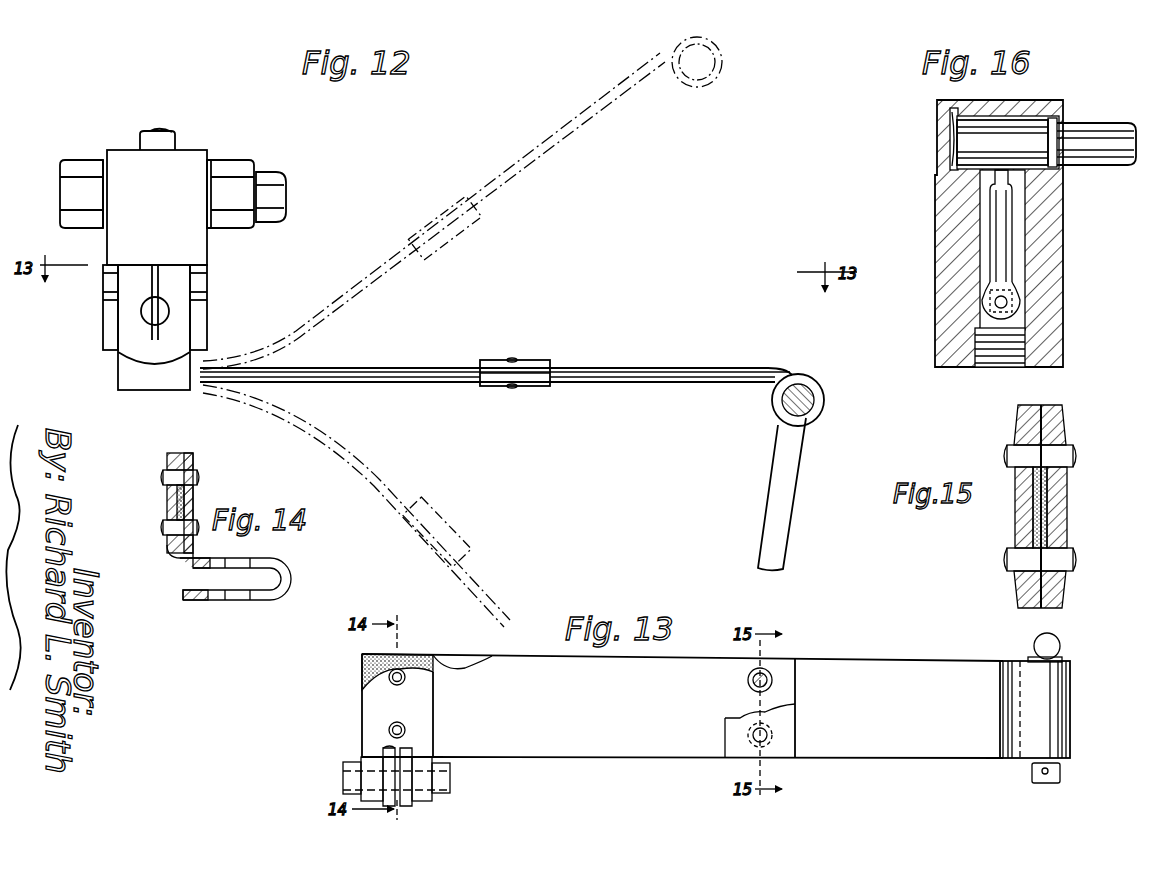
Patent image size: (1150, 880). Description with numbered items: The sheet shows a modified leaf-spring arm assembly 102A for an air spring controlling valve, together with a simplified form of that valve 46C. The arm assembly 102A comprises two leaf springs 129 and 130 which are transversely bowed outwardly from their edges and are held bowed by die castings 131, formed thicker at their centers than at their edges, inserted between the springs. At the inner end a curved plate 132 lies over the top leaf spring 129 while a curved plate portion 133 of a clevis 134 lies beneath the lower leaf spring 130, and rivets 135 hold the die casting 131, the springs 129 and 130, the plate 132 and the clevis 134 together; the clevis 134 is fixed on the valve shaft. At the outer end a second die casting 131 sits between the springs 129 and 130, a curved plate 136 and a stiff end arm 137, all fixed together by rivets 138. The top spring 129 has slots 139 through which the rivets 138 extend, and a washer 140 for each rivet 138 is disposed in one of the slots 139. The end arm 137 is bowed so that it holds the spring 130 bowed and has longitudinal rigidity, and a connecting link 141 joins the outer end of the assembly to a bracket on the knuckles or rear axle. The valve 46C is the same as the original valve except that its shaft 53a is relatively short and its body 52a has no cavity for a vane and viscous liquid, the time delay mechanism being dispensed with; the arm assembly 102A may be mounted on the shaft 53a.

In FIG. 12, the arm assembly 102A is at (590, 135).
In FIG. 13, the arm assembly 102A is at (902, 764).
In FIG. 12, the top leaf spring 129 is at (405, 368).
In FIG. 14, the top leaf spring 129 is at (186, 490).
In FIG. 13, the top leaf spring 129 is at (606, 758).
In FIG. 15, the top leaf spring 129 is at (1052, 490).
In FIG. 12, the lower leaf spring 130 is at (395, 381).
In FIG. 14, the lower leaf spring 130 is at (170, 490).
In FIG. 13, the lower leaf spring 130 is at (462, 665).
In FIG. 15, the lower leaf spring 130 is at (1025, 528).
In FIG. 14, the die casting 131 is at (168, 511).
In FIG. 13, the die casting 131 is at (362, 660).
In FIG. 15, the die casting 131 is at (1050, 508).
In FIG. 14, the curved plate 132 is at (190, 455).
In FIG. 13, the curved plate 132 is at (420, 706).
In FIG. 14, the curved plate portion 133 is at (168, 455).
In FIG. 12, the clevis 134 is at (178, 330).
In FIG. 14, the clevis 134 is at (197, 600).
In FIG. 13, the clevis 134 is at (420, 800).
In FIG. 14, the rivets 135 is at (168, 528).
In FIG. 12, the curved plate 136 is at (515, 360).
In FIG. 13, the curved plate 136 is at (790, 717).
In FIG. 15, the curved plate 136 is at (1055, 592).
In FIG. 12, the end arm 137 is at (683, 382).
In FIG. 13, the end arm 137 is at (938, 665).
In FIG. 15, the end arm 137 is at (1018, 410).
In FIG. 13, the rivets 138 is at (748, 688).
In FIG. 15, the rivets 138 is at (1006, 455).
In FIG. 13, the slots 139 is at (773, 680).
In FIG. 13, the washer 140 is at (768, 670).
In FIG. 15, the washer 140 is at (1046, 435).
In FIG. 12, the connecting link 141 is at (778, 490).
In FIG. 13, the connecting link 141 is at (1060, 647).
In FIG. 16, the valve 46C is at (926, 201).
In FIG. 16, the body 52a is at (1058, 268).
In FIG. 16, the shaft 53a is at (1108, 165).